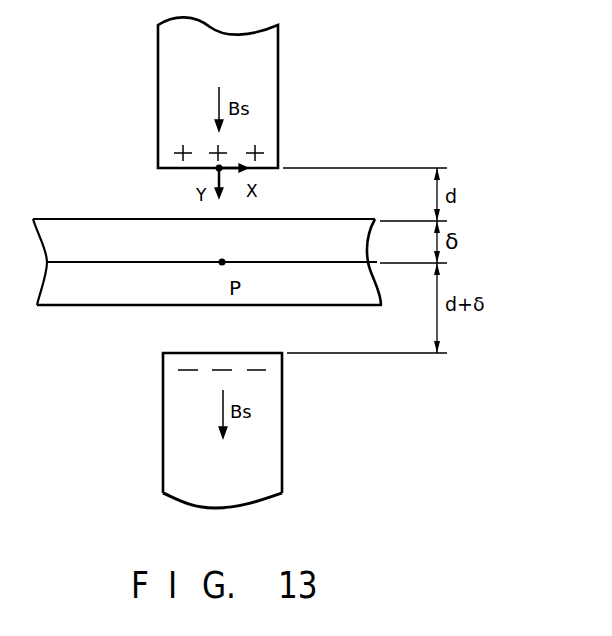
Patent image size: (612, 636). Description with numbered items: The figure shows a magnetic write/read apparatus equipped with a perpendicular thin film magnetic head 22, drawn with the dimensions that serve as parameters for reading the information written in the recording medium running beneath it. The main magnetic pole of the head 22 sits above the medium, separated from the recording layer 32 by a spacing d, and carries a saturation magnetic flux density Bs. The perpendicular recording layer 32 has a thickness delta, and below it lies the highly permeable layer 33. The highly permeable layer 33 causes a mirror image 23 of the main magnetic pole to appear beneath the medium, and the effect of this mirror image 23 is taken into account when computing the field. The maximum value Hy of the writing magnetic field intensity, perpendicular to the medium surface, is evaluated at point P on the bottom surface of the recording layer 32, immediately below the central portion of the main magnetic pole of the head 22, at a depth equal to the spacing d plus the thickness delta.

The perpendicular thin film magnetic head 22 is at (267, 66).
The mirror image of the main magnetic pole 23 is at (268, 452).
The recording layer 32 is at (72, 230).
The highly permeable layer 33 is at (72, 288).